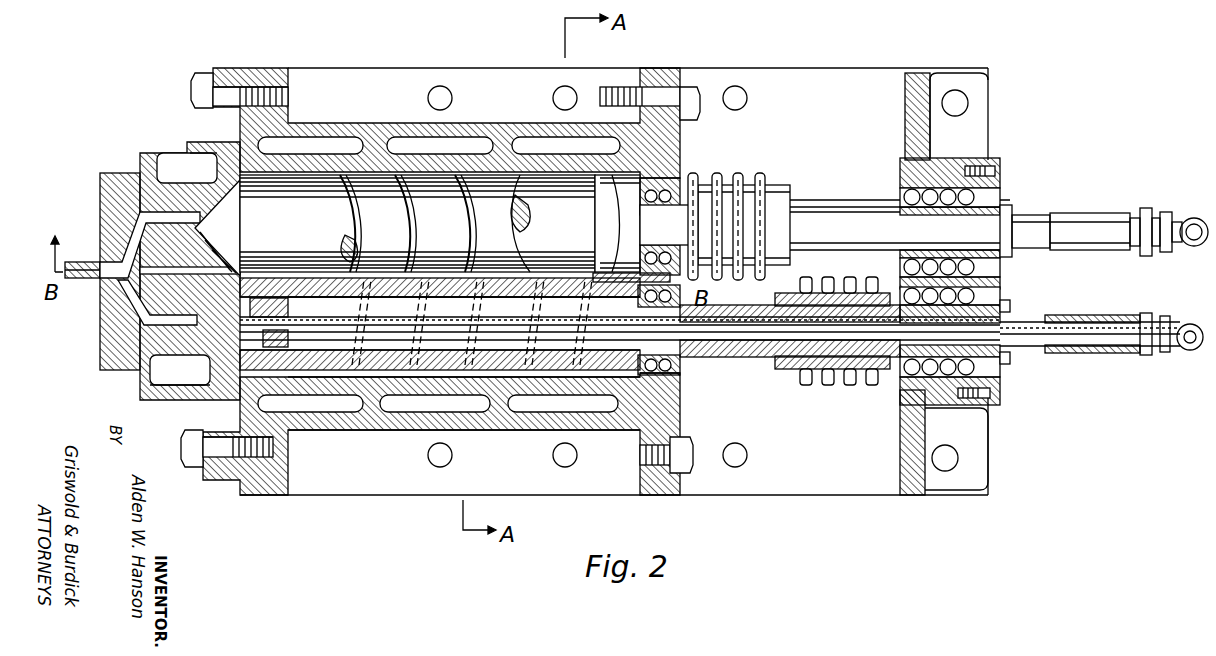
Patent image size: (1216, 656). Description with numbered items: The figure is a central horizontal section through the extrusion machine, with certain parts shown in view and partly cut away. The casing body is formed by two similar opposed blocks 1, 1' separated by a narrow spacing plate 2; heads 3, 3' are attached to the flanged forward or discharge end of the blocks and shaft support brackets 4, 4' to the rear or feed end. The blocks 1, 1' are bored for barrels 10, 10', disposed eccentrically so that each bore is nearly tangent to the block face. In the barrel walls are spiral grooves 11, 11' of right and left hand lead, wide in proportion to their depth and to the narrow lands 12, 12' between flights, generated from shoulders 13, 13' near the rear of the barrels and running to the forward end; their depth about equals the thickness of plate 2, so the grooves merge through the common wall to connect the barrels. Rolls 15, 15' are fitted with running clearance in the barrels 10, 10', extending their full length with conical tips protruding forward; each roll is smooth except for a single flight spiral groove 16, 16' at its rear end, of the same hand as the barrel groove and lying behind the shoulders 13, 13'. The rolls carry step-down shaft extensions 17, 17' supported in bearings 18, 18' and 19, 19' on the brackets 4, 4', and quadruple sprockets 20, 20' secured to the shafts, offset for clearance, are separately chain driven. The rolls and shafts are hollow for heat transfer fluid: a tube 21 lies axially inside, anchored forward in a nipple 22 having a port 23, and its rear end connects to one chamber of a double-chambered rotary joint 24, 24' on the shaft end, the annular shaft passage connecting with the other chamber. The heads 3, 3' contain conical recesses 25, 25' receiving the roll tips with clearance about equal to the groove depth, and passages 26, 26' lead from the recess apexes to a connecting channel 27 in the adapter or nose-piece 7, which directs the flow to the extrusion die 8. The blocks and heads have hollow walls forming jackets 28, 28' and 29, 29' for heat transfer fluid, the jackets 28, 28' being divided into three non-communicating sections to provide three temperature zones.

The block 1 is at (464, 453).
The block 1' is at (479, 223).
The spacing plate 2 is at (180, 213).
The head 3 is at (222, 469).
The head 3' is at (223, 102).
The shaft support bracket 4 is at (584, 434).
The shaft support bracket 4' is at (589, 123).
The adapter or nose-piece 7 is at (112, 370).
The extrusion die 8 is at (73, 240).
The barrel 10 is at (460, 430).
The barrel 10' is at (390, 105).
The spiral groove 11 is at (464, 377).
The spiral groove 11' is at (394, 223).
The land 12 is at (464, 422).
The land 12' is at (336, 223).
The shoulder 13 is at (563, 433).
The shoulder 13' is at (566, 125).
The roll 15 is at (440, 324).
The roll 15' is at (395, 225).
The single flight spiral groove 16 is at (678, 403).
The single flight spiral groove 16' is at (597, 223).
The shaft extension 17 is at (790, 353).
The shaft extension 17' is at (825, 214).
The bearing 18 is at (655, 328).
The bearing 18' is at (683, 208).
The bearing 19 is at (973, 346).
The bearing 19' is at (979, 223).
The quadruple sprocket 20 is at (832, 347).
The quadruple sprocket 20' is at (739, 207).
The tube 21 is at (440, 328).
The nipple 22 is at (287, 313).
The port 23 is at (292, 341).
The double-chambered rotary joint 24 is at (1101, 353).
The double-chambered rotary joint 24' is at (1110, 210).
The conical recess 25 is at (164, 403).
The conical recess 25' is at (175, 144).
The passage 26 is at (128, 320).
The passage 26' is at (127, 236).
The connecting channel 27 is at (120, 290).
The jacket 28 is at (310, 426).
The jacket 28' is at (310, 124).
The jacket 29 is at (180, 394).
The jacket 29' is at (159, 159).